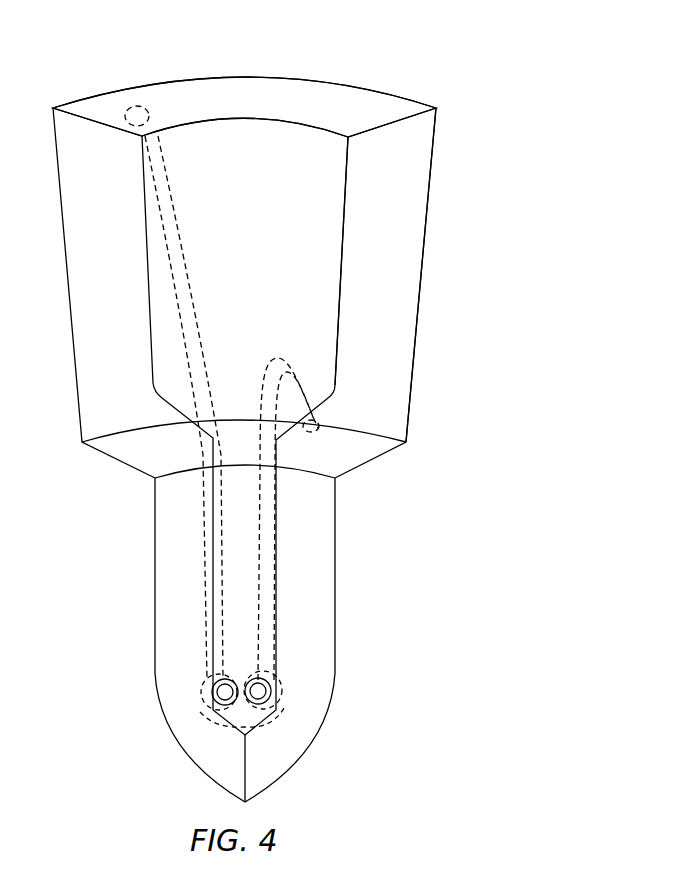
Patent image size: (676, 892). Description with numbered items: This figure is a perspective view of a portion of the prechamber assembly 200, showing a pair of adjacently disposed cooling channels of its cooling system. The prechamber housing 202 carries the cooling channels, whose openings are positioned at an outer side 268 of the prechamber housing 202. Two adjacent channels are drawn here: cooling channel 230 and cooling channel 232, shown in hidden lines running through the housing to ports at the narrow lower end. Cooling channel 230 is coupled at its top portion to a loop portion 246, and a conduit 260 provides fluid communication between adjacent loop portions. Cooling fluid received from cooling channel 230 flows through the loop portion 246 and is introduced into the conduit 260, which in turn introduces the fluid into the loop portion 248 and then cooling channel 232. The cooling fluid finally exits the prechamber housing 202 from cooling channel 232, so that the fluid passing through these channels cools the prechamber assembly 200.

The prechamber assembly 200 is at (566, 100).
The outer side 268 is at (424, 162).
The prechamber housing 202 is at (412, 232).
The cooling channel 232 is at (147, 110).
The cooling channel 230 is at (303, 410).
The loop portion 248 is at (193, 690).
The loop portion 246 is at (287, 690).
The conduit 260 is at (208, 718).